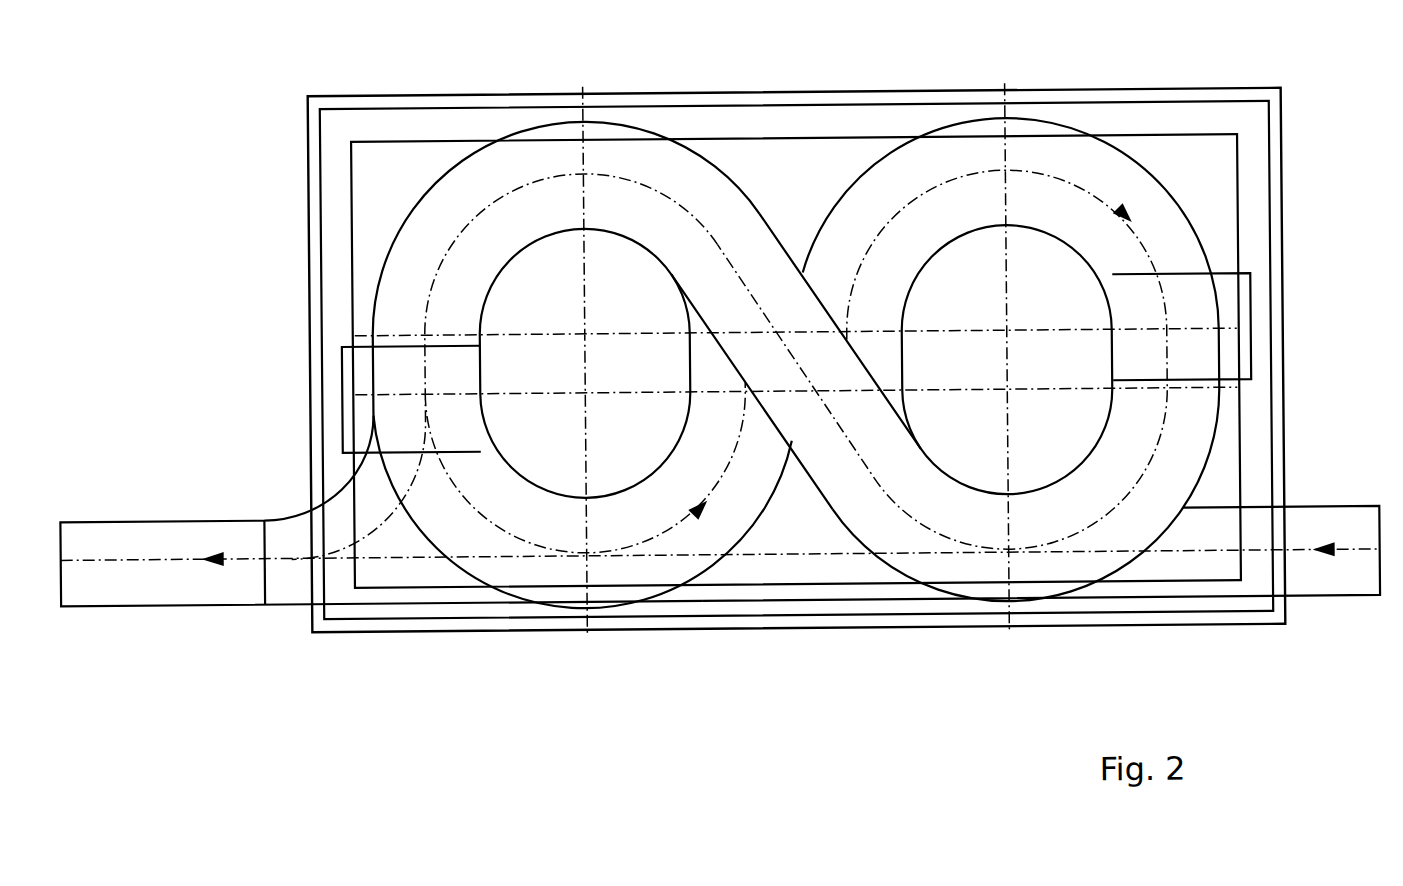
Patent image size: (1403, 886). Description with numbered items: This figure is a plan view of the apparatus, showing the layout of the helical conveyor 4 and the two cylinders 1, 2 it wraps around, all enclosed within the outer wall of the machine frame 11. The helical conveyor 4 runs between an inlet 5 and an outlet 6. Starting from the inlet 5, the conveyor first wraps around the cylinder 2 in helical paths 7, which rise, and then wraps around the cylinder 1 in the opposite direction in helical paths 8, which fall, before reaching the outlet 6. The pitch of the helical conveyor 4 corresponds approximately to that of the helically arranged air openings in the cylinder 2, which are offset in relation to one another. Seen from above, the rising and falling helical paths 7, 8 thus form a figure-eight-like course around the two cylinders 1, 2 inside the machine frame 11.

The cylinder 1 is at (544, 486).
The cylinder 2 is at (1113, 413).
The helical conveyor 4 is at (1152, 156).
The inlet 5 is at (1308, 534).
The outlet 6 is at (151, 537).
The helical paths 7 is at (1088, 164).
The helical paths 8 is at (424, 239).
The machine frame 11 is at (1290, 176).